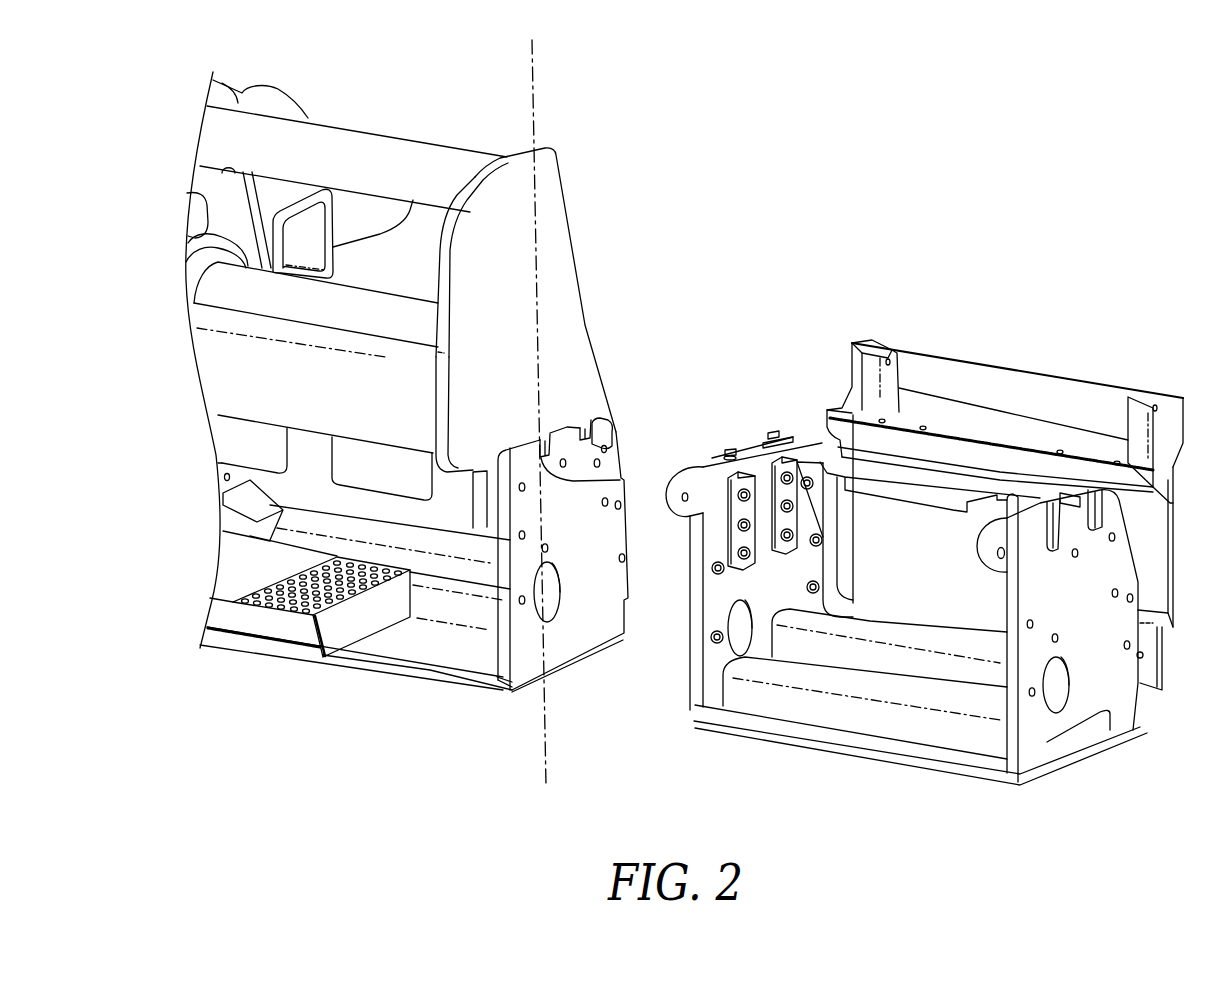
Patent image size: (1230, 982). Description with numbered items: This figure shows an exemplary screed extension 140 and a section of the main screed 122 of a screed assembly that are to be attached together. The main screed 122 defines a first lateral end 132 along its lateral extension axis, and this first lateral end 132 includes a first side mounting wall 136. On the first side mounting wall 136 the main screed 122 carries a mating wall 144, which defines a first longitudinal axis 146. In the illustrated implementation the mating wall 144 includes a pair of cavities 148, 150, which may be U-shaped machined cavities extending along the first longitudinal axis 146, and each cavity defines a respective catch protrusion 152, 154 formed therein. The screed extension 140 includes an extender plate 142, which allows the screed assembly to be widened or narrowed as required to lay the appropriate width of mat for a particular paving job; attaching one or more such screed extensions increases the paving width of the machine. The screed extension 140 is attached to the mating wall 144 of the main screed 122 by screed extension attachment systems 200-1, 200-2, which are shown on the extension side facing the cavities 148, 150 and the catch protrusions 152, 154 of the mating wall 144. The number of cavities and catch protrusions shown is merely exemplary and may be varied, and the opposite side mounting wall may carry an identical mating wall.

The main screed 122 is at (372, 129).
The first lateral end 132 is at (566, 171).
The first side mounting wall 136 is at (552, 238).
The screed extension 140 is at (1016, 369).
The extender plate 142 is at (784, 743).
The mating wall 144 is at (605, 428).
The first longitudinal axis 146 is at (544, 778).
The cavity 148 is at (528, 449).
The cavity 150 is at (574, 420).
The catch protrusion 152 is at (613, 481).
The catch protrusion 154 is at (608, 448).
The screed extension attachment system 200-1 is at (728, 451).
The screed extension attachment system 200-2 is at (768, 420).